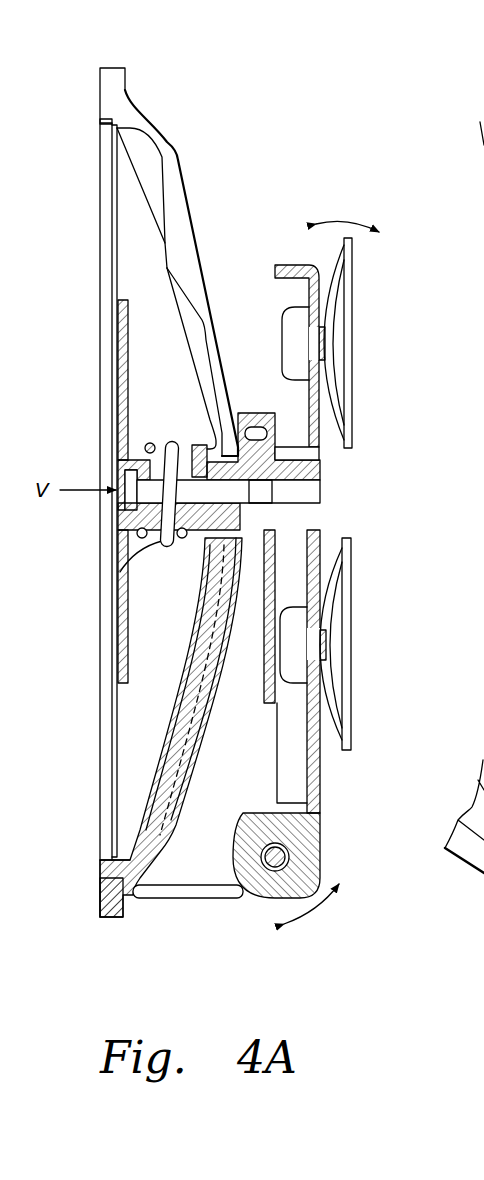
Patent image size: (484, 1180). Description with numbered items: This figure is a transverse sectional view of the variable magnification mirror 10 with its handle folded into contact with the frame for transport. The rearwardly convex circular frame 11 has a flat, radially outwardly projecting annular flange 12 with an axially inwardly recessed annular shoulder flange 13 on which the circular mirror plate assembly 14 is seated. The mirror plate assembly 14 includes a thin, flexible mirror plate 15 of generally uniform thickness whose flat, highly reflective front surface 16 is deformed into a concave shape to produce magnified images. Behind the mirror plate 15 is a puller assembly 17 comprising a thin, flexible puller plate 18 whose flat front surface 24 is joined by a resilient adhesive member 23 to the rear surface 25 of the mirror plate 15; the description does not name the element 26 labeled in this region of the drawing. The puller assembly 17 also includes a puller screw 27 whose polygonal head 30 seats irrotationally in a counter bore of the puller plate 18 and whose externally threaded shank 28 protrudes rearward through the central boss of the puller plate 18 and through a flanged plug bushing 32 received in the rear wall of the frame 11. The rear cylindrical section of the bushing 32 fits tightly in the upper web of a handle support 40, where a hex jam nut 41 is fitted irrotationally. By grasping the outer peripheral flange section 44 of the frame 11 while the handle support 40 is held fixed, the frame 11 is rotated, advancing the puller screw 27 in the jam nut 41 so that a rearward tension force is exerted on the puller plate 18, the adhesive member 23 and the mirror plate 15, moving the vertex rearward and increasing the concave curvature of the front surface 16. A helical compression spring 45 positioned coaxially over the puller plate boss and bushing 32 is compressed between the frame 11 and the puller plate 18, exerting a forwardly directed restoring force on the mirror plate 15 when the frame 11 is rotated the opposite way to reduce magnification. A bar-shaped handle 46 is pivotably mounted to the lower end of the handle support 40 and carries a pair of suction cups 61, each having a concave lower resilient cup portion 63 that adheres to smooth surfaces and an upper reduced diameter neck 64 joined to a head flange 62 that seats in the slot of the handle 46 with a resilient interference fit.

The variable magnification mirror 10 is at (173, 112).
The frame 11 is at (197, 228).
The annular flange 12 is at (100, 82).
The annular shoulder flange 13 is at (103, 122).
The mirror plate assembly 14 is at (112, 267).
The mirror plate 15 is at (100, 220).
The front reflective surface 16 is at (100, 680).
The puller assembly 17 is at (165, 558).
The puller plate 18 is at (130, 338).
The resilient adhesive member 23 is at (118, 350).
The front surface of puller plate 24 is at (118, 628).
The rear surface of mirror plate 25 is at (117, 197).
The pin 26 is at (160, 440).
The puller screw 27 is at (120, 470).
The threaded shank 28 is at (255, 531).
The polygonal head 30 is at (120, 497).
The flanged plug bushing 32 is at (275, 447).
The handle support 40 is at (213, 898).
The hex jam nut 41 is at (262, 495).
The outer peripheral flange section 44 is at (118, 68).
The helical compression spring 45 is at (140, 548).
The handle 46 is at (320, 800).
The suction cups 61 is at (360, 289).
The head flange 62 is at (295, 683).
The lower resilient cup portion 63 is at (351, 715).
The neck 64 is at (320, 607).